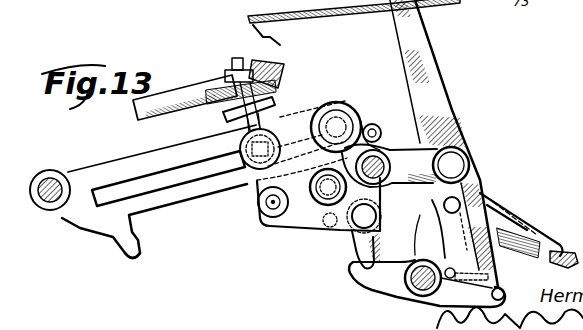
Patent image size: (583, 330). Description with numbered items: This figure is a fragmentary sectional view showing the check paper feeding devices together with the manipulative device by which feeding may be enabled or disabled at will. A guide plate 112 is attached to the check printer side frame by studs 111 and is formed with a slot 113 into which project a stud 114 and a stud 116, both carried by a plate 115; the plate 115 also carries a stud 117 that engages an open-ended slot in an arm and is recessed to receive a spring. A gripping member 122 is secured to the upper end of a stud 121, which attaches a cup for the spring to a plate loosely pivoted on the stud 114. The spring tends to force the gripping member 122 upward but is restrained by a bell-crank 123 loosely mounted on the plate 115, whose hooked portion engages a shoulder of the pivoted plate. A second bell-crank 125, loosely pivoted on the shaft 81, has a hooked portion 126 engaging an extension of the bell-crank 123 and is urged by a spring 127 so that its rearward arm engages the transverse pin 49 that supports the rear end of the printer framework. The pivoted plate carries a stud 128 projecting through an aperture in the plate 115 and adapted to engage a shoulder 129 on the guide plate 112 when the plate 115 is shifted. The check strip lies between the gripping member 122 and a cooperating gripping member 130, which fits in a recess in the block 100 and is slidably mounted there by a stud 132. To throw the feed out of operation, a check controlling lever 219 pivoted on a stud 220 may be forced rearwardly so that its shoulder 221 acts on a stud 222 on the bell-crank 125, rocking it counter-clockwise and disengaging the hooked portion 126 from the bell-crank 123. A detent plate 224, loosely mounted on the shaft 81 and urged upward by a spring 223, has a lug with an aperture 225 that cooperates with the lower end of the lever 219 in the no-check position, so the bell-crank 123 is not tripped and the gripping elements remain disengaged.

The transverse pin 49 is at (565, 255).
The shaft 81 is at (407, 287).
The block 100 is at (198, 85).
The studs 111 is at (48, 200).
The guide plate 112 is at (134, 169).
The slot 113 is at (172, 170).
The stud 114 is at (349, 113).
The plate 115 is at (374, 124).
The stud 116 is at (262, 172).
The stud 117 is at (267, 225).
The stud 121 is at (272, 107).
The gripping member 122 is at (289, 82).
The bell-crank 123 is at (350, 239).
The second bell-crank 125 is at (433, 240).
The hooked portion 126 is at (356, 263).
The spring 127 is at (523, 230).
The stud 128 is at (312, 199).
The shoulder 129 is at (140, 246).
The cooperating gripping member 130 is at (287, 64).
The stud 132 is at (277, 56).
The check controlling lever 219 is at (444, 108).
The stud 220 is at (458, 166).
The shoulder 221 is at (477, 200).
The stud 222 is at (446, 203).
The spring 223 is at (500, 247).
The detent plate 224 is at (491, 293).
The aperture 225 is at (467, 242).